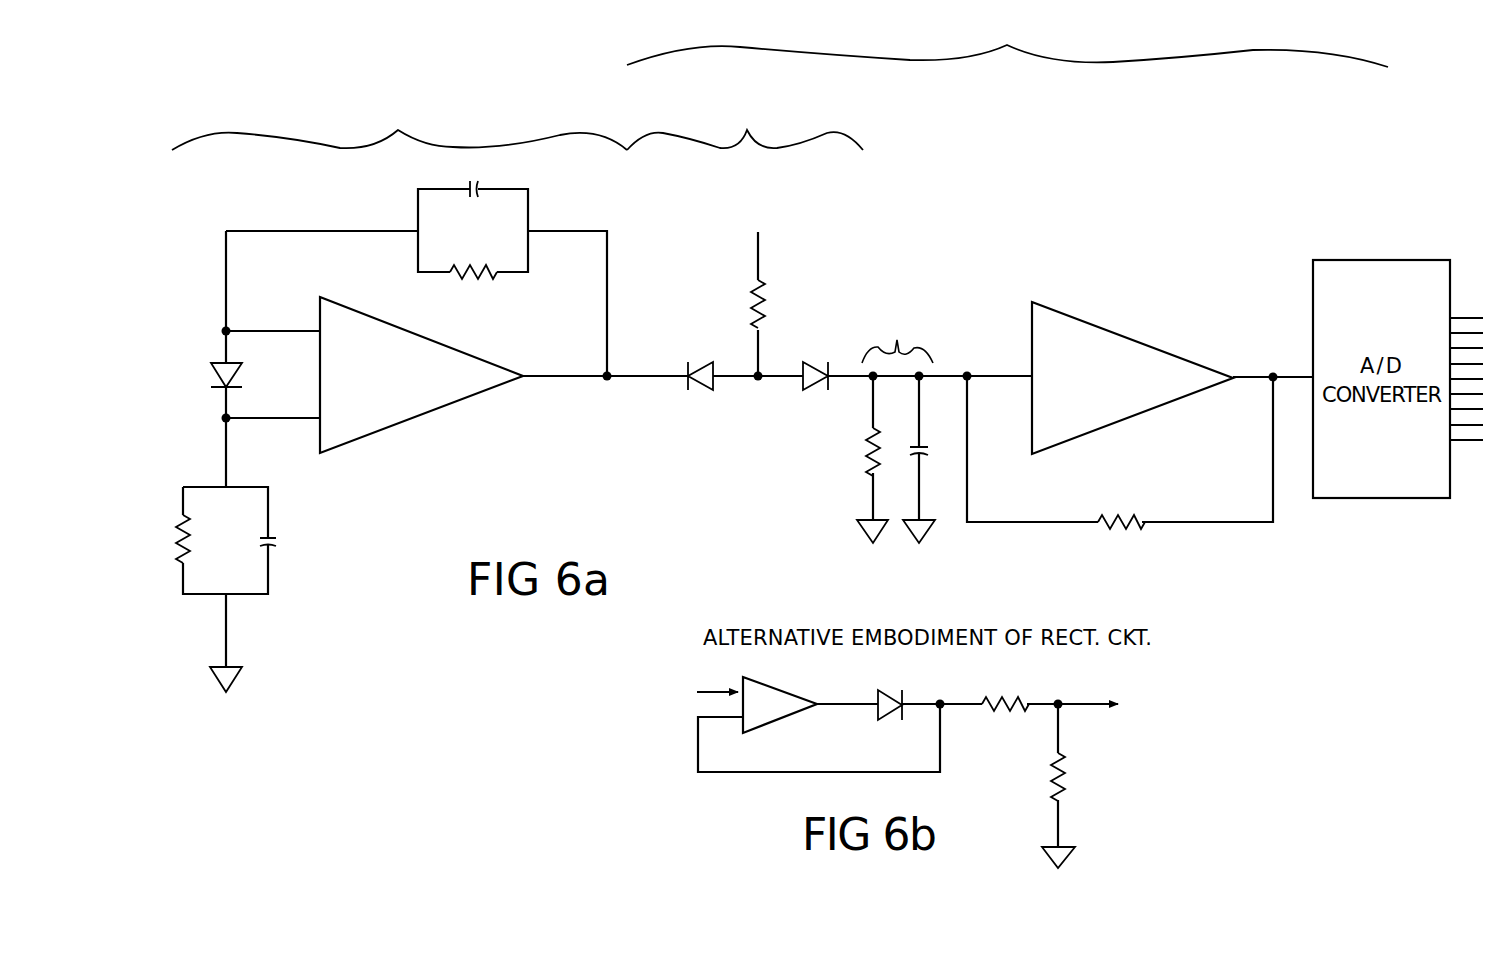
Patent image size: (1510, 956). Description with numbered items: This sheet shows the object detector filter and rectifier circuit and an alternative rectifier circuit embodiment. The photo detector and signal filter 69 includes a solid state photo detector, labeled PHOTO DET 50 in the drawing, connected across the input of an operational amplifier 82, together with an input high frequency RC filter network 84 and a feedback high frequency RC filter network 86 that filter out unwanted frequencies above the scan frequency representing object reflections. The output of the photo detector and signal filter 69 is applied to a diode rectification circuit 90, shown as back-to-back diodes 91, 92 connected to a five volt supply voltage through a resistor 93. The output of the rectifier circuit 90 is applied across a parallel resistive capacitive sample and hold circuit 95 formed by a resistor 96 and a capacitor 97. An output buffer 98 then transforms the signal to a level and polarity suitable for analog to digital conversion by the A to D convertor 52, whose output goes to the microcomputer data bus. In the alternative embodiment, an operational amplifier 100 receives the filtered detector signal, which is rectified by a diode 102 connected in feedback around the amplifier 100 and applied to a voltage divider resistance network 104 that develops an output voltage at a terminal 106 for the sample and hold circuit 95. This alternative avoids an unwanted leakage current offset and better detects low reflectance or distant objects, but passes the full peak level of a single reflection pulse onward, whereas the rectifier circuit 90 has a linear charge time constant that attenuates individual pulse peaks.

In FIG. 6A, the A to D convertor 52 is at (1008, 42).
In FIG. 6A, the photo detector and signal filter 69 is at (400, 130).
In FIG. 6A, the diode rectification circuit 90 is at (747, 130).
In FIG. 6A, the feedback high frequency RC filter network 86 is at (491, 181).
In FIG. 6A, the operational amplifier 82 is at (449, 347).
In FIG. 6A, the photodetector 50 is at (212, 358).
In FIG. 6A, the input high frequency RC filter network 84 is at (238, 481).
In FIG. 6A, the resistor 93 is at (753, 290).
In FIG. 6A, the diode 91 is at (703, 394).
In FIG. 6A, the diode 92 is at (815, 394).
In FIG. 6A, the parallel resistive capacitive sample and hold circuit 95 is at (900, 337).
In FIG. 6A, the resistor 96 is at (865, 474).
In FIG. 6A, the capacitor 97 is at (934, 458).
In FIG. 6A, the output buffer 98 is at (1160, 349).
In FIG. 6B, the operational amplifier 100 is at (767, 679).
In FIG. 6B, the diode 102 is at (887, 686).
In FIG. 6B, the voltage divider resistance network 104 is at (1005, 694).
In FIG. 6B, the terminal 106 is at (1130, 700).